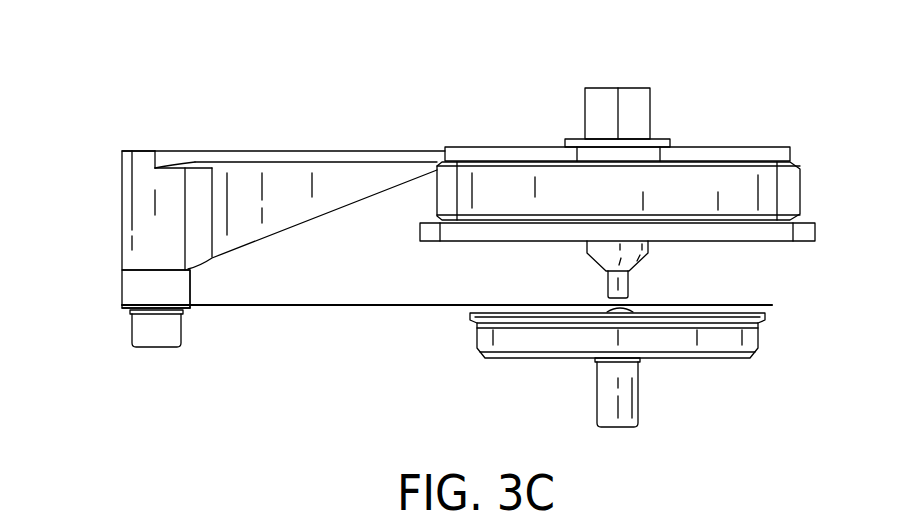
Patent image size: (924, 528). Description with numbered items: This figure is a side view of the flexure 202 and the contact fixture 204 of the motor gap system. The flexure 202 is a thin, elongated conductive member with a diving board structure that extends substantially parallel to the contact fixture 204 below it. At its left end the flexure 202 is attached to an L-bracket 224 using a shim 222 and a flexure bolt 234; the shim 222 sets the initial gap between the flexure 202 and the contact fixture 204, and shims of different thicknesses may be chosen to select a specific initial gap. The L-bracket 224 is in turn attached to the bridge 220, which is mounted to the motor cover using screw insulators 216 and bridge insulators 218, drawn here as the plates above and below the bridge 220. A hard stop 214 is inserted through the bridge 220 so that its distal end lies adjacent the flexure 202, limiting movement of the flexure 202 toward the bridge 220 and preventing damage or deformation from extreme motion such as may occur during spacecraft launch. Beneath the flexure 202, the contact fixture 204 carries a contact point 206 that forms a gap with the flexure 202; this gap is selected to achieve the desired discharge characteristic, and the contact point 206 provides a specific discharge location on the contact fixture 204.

The flexure 202 is at (312, 308).
The contact fixture 204 is at (718, 335).
The contact point 206 is at (612, 309).
The hard stop 214 is at (637, 103).
The screw insulator 216 is at (773, 145).
The bridge insulator 218 is at (768, 230).
The bridge 220 is at (790, 188).
The shim 222 is at (143, 285).
The L-bracket 224 is at (143, 192).
The flexure bolt 234 is at (143, 330).